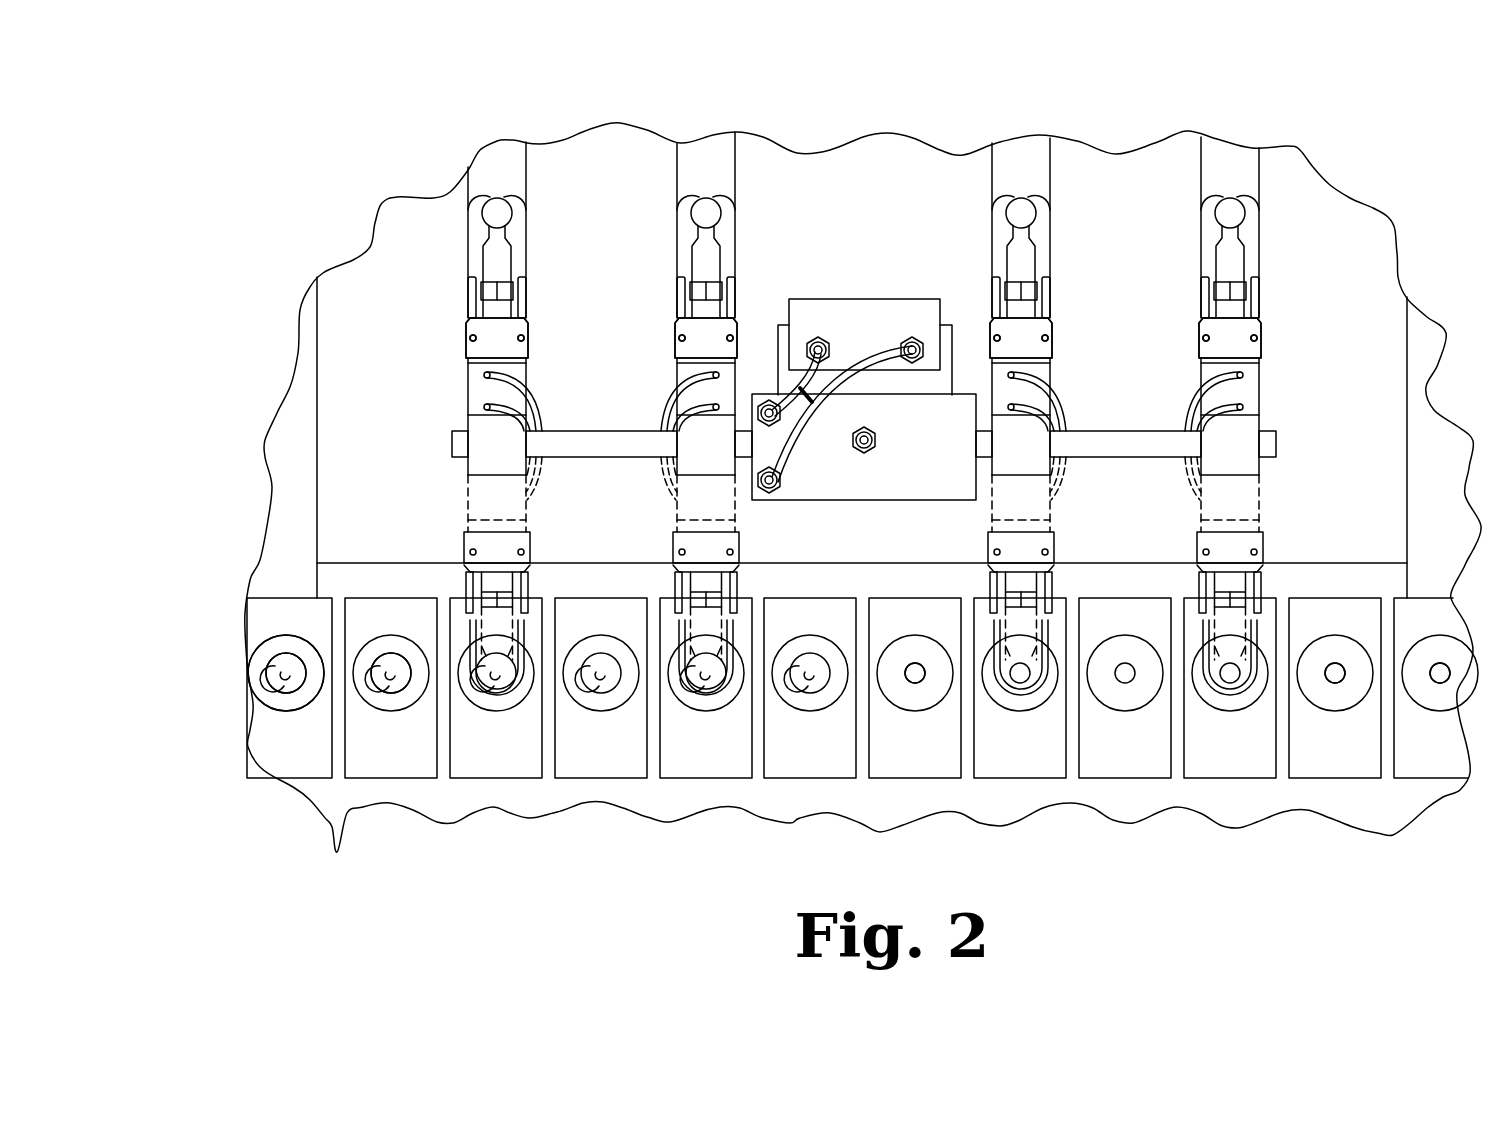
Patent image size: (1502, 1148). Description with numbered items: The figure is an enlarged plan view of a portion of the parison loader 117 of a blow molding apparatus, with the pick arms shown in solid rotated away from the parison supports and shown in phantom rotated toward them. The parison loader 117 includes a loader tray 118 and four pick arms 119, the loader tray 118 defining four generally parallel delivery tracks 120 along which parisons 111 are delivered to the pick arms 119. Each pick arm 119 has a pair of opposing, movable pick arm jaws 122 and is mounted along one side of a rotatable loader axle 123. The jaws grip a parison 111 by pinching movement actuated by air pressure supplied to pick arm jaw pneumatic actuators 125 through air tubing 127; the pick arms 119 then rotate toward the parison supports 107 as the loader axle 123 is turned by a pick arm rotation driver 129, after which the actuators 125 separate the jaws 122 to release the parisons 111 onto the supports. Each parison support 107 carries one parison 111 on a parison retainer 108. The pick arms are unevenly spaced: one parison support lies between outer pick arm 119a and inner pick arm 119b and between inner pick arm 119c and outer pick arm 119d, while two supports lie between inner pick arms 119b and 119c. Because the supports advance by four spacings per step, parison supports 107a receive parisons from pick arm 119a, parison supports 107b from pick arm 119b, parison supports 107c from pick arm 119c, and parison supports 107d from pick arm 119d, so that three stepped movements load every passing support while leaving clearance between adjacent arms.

The parison loader 117 is at (333, 238).
The loader tray 118 is at (842, 183).
The delivery tracks 120 is at (686, 173).
The pick arm jaws 122 is at (474, 246).
The pick arms 119 is at (677, 318).
The outer pick arm 119a is at (470, 318).
The inner pick arm 119b is at (735, 318).
The inner pick arm 119c is at (992, 318).
The outer pick arm 119d is at (1259, 318).
The pick arm jaw pneumatic actuators 125 is at (677, 363).
The air tubing 127 is at (665, 415).
The loader axle 123 is at (603, 445).
The pick arm rotation driver 129 is at (865, 488).
The parison supports 107 is at (382, 658).
The parison supports 107a is at (493, 703).
The parison supports 107b is at (263, 698).
The parison supports 107c is at (606, 704).
The parison supports 107d is at (420, 688).
The parison retainer 108 is at (917, 684).
The parison 111 is at (263, 697).